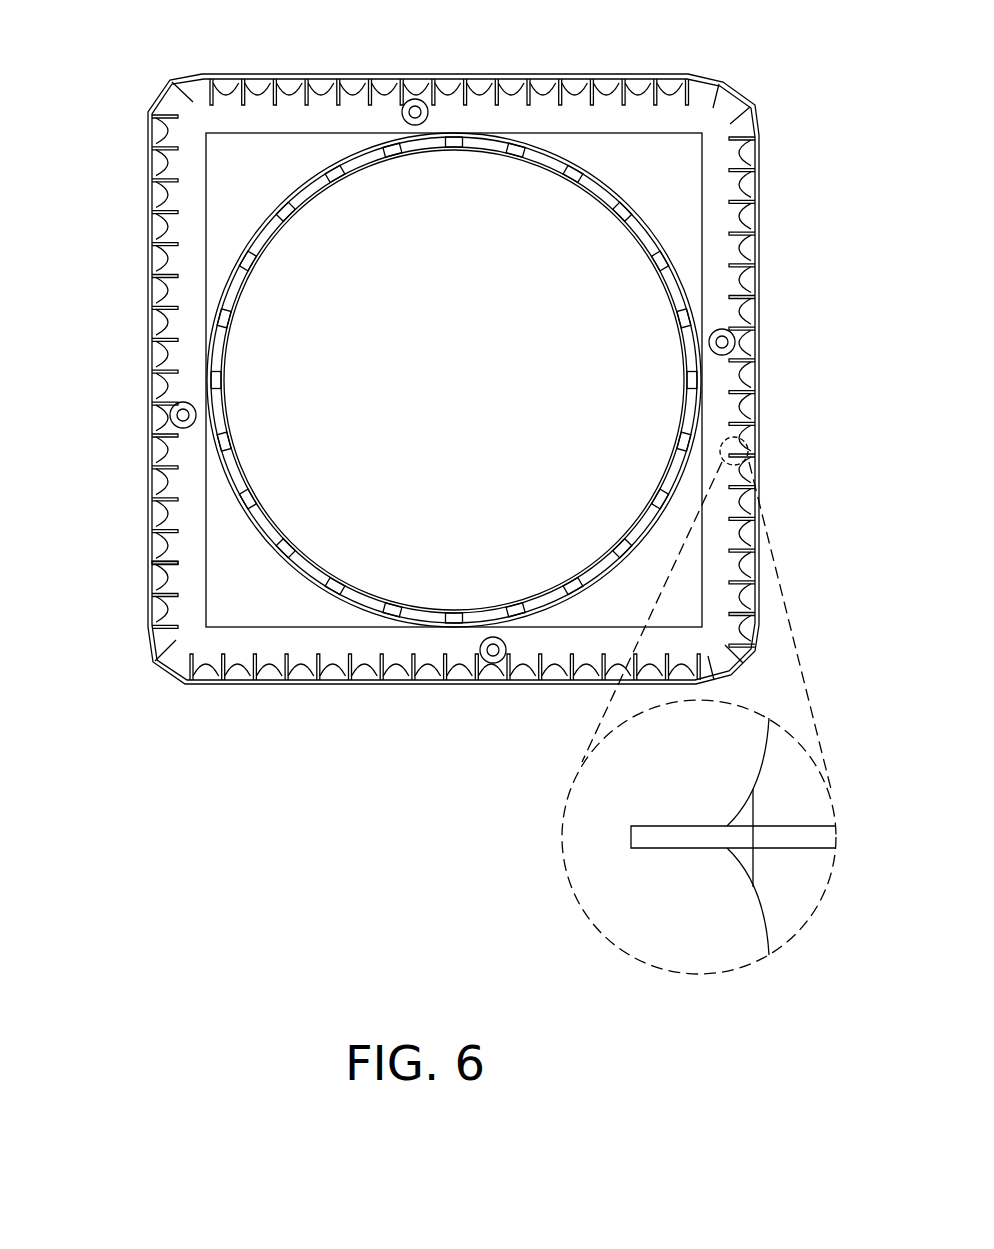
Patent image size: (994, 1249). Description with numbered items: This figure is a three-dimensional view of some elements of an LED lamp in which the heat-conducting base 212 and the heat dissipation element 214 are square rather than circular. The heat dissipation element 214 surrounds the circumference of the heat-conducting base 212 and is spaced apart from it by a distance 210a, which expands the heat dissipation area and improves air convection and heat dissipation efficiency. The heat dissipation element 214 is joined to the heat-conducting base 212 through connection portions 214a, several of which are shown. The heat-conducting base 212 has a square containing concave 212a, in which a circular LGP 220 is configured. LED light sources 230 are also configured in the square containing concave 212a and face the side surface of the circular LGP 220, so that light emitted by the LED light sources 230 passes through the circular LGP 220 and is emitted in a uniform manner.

The distance 210a is at (392, 379).
The heat-conducting base 212 is at (167, 605).
The square containing concave 212a is at (256, 158).
The heat dissipation element 214 is at (150, 573).
The connection portion 214a is at (163, 560).
The circular LGP 220 is at (452, 185).
The LED light sources 230 is at (513, 143).